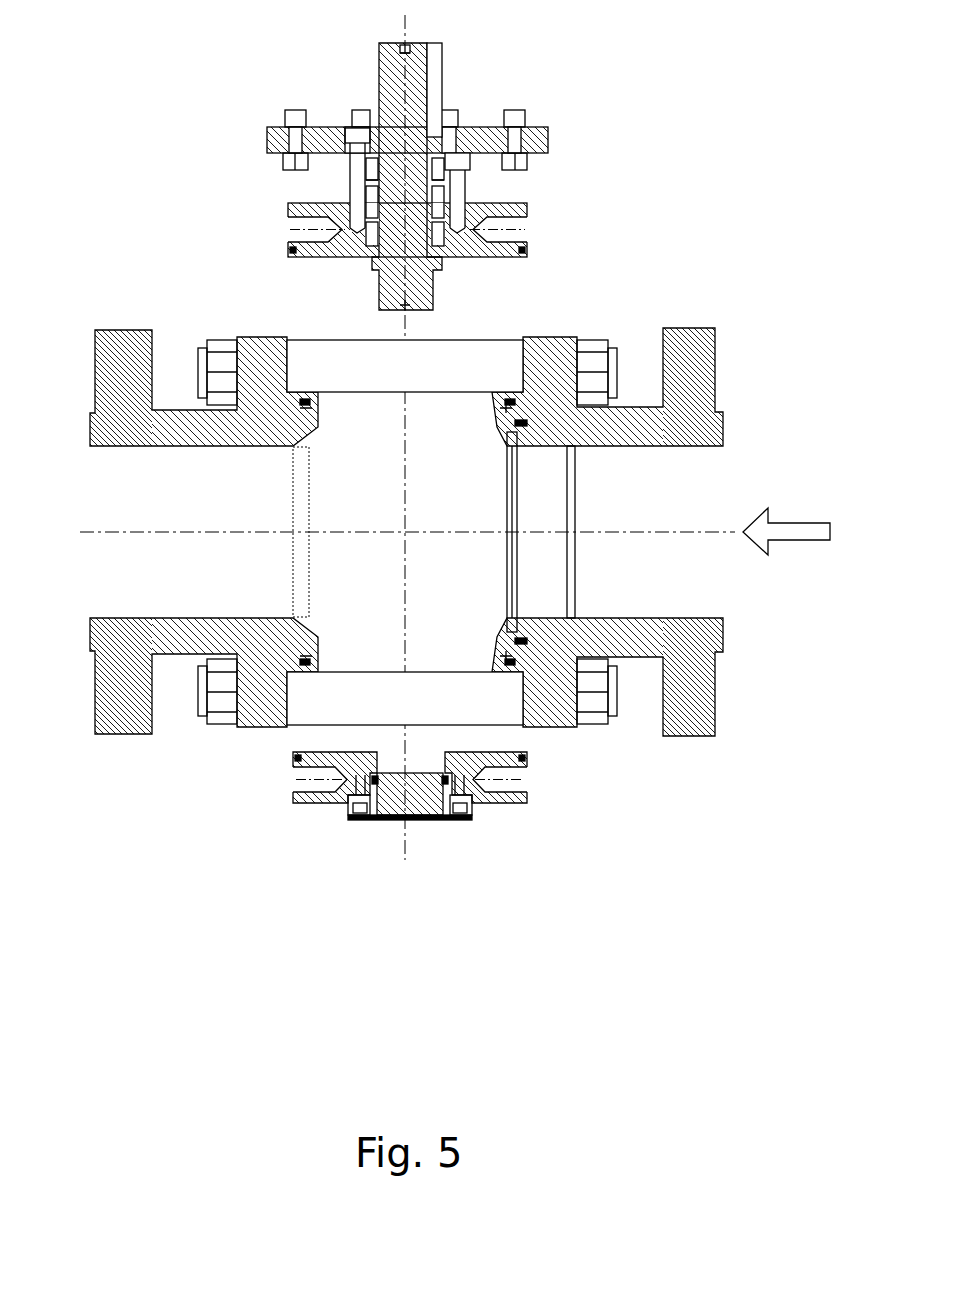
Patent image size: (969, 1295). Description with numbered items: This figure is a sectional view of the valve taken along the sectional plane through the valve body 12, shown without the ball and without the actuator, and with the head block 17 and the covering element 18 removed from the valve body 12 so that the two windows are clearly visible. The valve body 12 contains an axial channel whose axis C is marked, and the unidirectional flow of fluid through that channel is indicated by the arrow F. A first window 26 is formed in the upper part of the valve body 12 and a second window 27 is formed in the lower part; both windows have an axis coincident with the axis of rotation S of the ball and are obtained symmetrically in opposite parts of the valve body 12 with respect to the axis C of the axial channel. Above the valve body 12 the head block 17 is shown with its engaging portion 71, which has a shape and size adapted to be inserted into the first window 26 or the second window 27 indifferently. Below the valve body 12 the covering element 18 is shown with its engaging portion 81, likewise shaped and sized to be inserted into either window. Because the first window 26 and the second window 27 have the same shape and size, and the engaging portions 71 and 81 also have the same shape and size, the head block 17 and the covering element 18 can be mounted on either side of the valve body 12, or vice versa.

The valve body 12 is at (553, 712).
The head block 17 is at (240, 183).
The covering element 18 is at (458, 834).
The first window 26 is at (484, 381).
The second window 27 is at (361, 712).
The engaging portion 71 is at (525, 207).
The engaging portion 81 is at (300, 797).
The axis of the axial channel C is at (256, 532).
The axis of rotation S is at (413, 505).
The arrow indicating fluid flow F is at (775, 528).